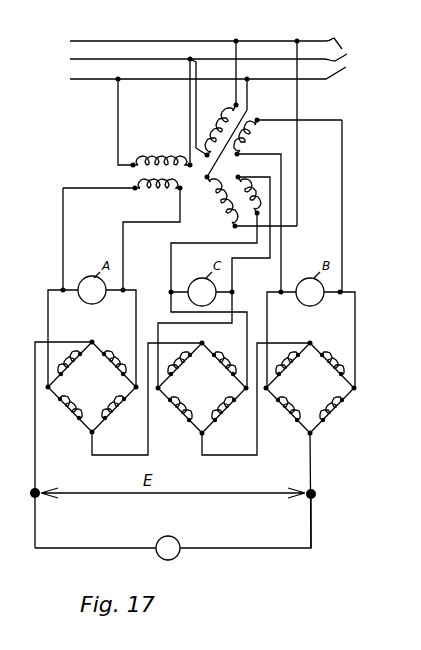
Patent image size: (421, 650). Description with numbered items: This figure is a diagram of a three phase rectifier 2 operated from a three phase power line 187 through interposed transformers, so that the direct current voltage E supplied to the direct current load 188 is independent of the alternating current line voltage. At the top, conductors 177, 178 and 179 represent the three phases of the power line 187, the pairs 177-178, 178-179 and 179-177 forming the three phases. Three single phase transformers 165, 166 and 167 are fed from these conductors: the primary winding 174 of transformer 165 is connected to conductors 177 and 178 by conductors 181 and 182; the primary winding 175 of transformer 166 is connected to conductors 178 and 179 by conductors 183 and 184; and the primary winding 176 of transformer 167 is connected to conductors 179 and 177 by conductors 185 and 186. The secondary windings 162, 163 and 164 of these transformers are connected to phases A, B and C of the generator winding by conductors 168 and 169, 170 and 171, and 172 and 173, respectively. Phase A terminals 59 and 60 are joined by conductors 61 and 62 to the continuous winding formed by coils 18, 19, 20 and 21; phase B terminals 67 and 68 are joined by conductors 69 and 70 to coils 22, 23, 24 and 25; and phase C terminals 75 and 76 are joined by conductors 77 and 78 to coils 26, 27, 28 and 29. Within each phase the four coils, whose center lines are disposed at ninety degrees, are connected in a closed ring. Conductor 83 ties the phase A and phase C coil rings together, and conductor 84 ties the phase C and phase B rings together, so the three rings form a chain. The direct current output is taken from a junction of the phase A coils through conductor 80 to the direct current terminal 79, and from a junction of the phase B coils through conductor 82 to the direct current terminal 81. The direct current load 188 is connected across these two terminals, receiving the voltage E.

The conductor 179 is at (150, 40).
The conductor 178 is at (138, 60).
The conductor 177 is at (137, 79).
The three phase power line 187 is at (353, 61).
The conductor 181 is at (118, 97).
The conductor 182 is at (189, 118).
The conductor 183 is at (197, 72).
The primary winding 174 is at (138, 158).
The conductor 184 is at (236, 52).
The primary winding 175 is at (232, 115).
The conductor 186 is at (247, 93).
The single phase transformer 166 is at (244, 116).
The secondary winding 163 is at (251, 143).
The conductor 171 is at (343, 230).
The conductor 170 is at (281, 258).
The secondary winding 164 is at (247, 183).
The conductor 185 is at (297, 103).
The primary winding 176 is at (220, 206).
The single phase transformer 167 is at (234, 228).
The single phase transformer 165 is at (133, 188).
The secondary winding 162 is at (161, 191).
The conductor 168 is at (63, 217).
The conductor 169 is at (123, 240).
The conductor 172 is at (171, 252).
The conductor 173 is at (234, 258).
The terminal 59 is at (61, 288).
The terminal 60 is at (125, 287).
The conductor 61 is at (48, 323).
The conductor 62 is at (136, 323).
The terminal 75 is at (173, 290).
The terminal 76 is at (235, 288).
The conductor 77 is at (247, 337).
The conductor 78 is at (158, 332).
The terminal 67 is at (283, 288).
The terminal 68 is at (343, 289).
The conductor 69 is at (267, 323).
The conductor 70 is at (355, 323).
The coil 18 is at (66, 366).
The coil 19 is at (114, 364).
The coil 20 is at (110, 410).
The coil 21 is at (82, 404).
The coil 26 is at (178, 366).
The coil 27 is at (226, 366).
The coil 28 is at (220, 411).
The coil 29 is at (192, 405).
The coil 22 is at (286, 366).
The coil 23 is at (334, 366).
The coil 24 is at (328, 411).
The coil 25 is at (300, 405).
The conductor 80 is at (35, 437).
The conductor 83 is at (148, 437).
The conductor 84 is at (257, 437).
The conductor 82 is at (312, 452).
The direct current terminal 79 is at (38, 490).
The direct current terminal 81 is at (317, 491).
The direct current load 188 is at (176, 543).
The rectifier 2 is at (112, 408).